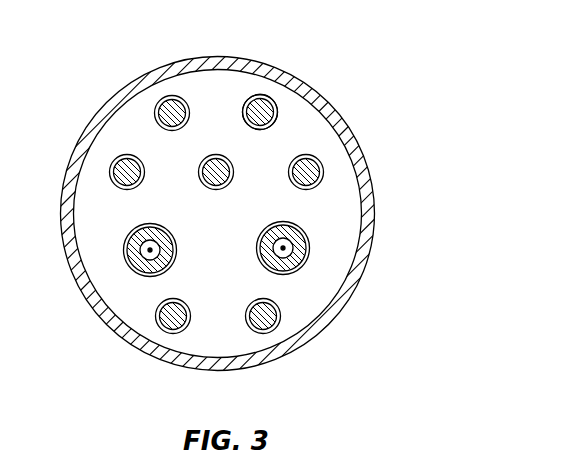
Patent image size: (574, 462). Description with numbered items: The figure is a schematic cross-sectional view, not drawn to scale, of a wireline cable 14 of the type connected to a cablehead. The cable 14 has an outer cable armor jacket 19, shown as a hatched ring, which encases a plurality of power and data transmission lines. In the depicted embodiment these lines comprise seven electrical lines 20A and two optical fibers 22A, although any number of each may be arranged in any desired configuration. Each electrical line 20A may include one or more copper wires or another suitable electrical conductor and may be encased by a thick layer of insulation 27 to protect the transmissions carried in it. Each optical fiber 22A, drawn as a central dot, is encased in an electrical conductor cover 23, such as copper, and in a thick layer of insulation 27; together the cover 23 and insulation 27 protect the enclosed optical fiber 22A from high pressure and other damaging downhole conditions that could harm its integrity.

The wireline cable 14 is at (401, 66).
The cable armor jacket 19 is at (253, 57).
The insulation layer 27 is at (276, 99).
The electrical line 20A is at (278, 113).
The electrical conductor cover 23 is at (308, 240).
The optical fiber 22A is at (290, 258).